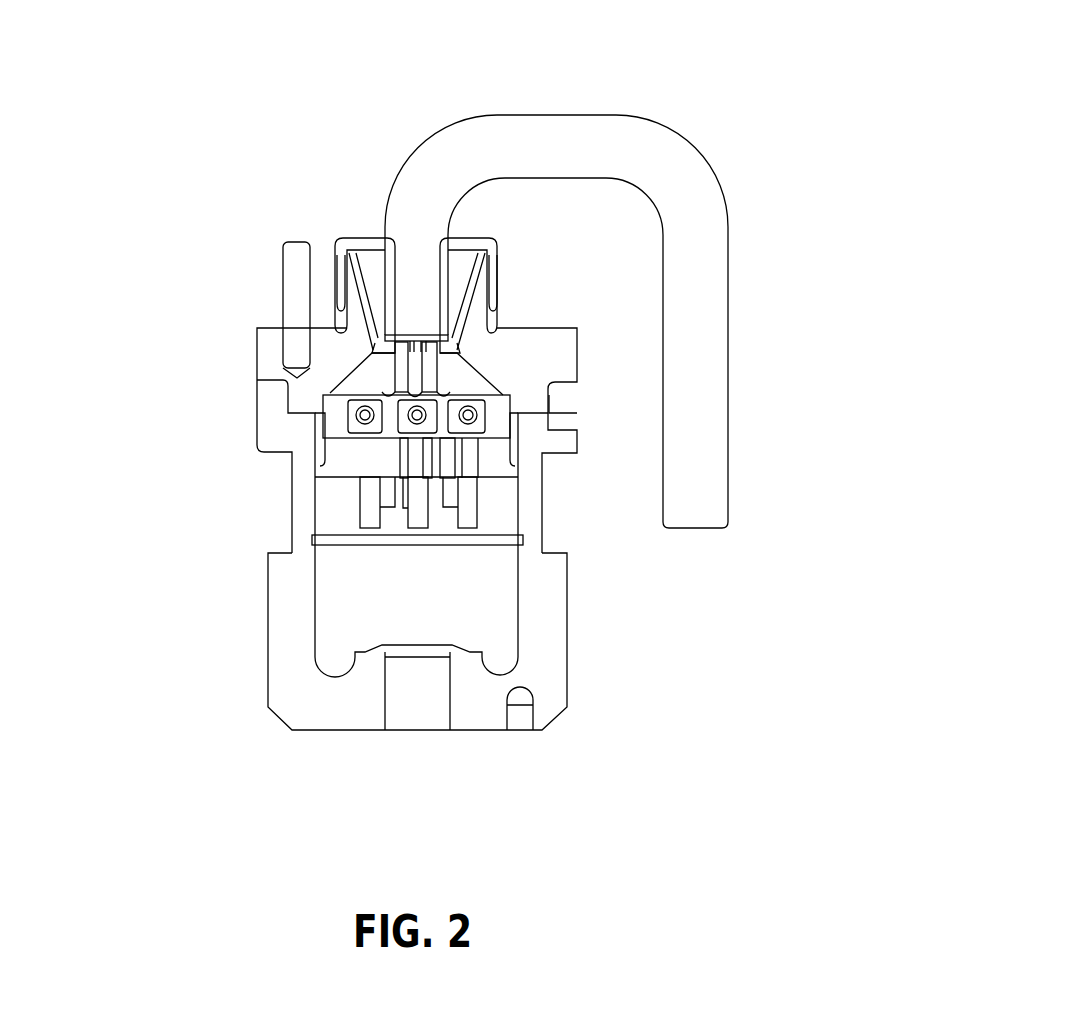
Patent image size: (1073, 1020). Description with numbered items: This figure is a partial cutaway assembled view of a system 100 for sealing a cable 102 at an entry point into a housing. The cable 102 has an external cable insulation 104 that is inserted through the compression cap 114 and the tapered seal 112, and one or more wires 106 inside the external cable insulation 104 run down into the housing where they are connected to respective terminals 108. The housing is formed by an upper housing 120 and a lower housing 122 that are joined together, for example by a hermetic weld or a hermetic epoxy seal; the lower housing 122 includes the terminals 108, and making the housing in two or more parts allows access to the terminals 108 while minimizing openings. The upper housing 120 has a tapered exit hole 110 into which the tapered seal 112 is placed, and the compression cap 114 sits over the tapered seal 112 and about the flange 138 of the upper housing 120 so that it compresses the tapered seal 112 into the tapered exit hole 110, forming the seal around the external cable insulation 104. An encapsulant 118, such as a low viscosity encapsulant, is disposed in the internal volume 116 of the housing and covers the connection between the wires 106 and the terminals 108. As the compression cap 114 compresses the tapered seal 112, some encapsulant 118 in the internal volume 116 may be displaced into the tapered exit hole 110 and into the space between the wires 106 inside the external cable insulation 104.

The system 100 is at (960, 84).
The cable 102 is at (489, 119).
The external cable insulation 104 is at (710, 272).
The wires 106 is at (393, 372).
The terminals 108 is at (383, 431).
The tapered exit hole 110 is at (477, 263).
The tapered seal 112 is at (375, 305).
The compression cap 114 is at (352, 238).
The internal volume 116 is at (458, 360).
The encapsulant 118 is at (467, 380).
The upper housing 120 is at (505, 327).
The lower housing 122 is at (268, 607).
The flange 138 is at (345, 263).